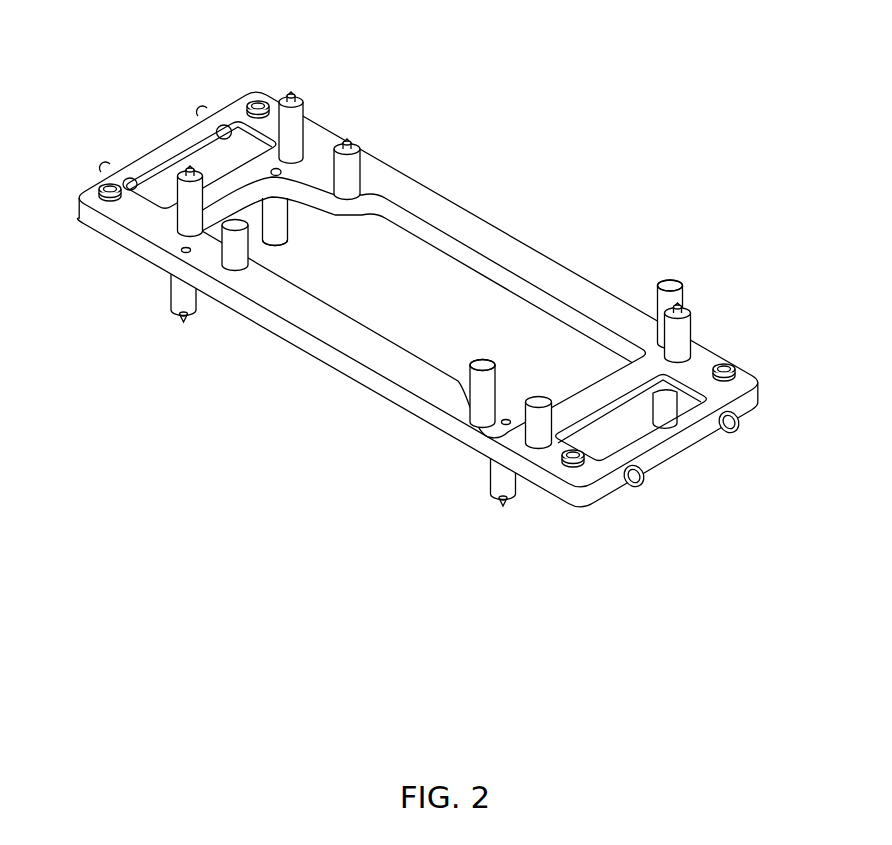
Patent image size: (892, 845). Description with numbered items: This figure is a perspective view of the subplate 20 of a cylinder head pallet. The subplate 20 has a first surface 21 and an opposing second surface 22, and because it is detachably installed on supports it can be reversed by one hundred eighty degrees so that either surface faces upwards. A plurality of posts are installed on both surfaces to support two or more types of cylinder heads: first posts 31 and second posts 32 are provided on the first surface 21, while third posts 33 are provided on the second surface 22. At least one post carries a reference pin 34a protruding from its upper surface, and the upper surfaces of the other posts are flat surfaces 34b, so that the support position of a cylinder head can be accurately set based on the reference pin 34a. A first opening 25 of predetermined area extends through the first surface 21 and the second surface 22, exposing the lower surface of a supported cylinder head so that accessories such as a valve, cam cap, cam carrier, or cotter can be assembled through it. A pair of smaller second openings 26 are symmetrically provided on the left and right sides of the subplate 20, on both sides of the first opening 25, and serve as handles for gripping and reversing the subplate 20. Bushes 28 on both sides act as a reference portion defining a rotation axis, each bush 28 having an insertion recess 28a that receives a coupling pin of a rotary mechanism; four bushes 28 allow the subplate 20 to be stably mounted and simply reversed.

The subplate 20 is at (135, 39).
The first surface 21 is at (531, 262).
The second surface 22 is at (327, 367).
The first opening 25 is at (445, 284).
The second openings 26 is at (173, 196).
The bush 28 is at (104, 166).
The insertion recess 28a is at (643, 485).
The first posts 31 is at (297, 125).
The second posts 32 is at (352, 176).
The third posts 33 is at (279, 218).
The reference pin 34a is at (292, 94).
The flat surfaces 34b is at (672, 283).